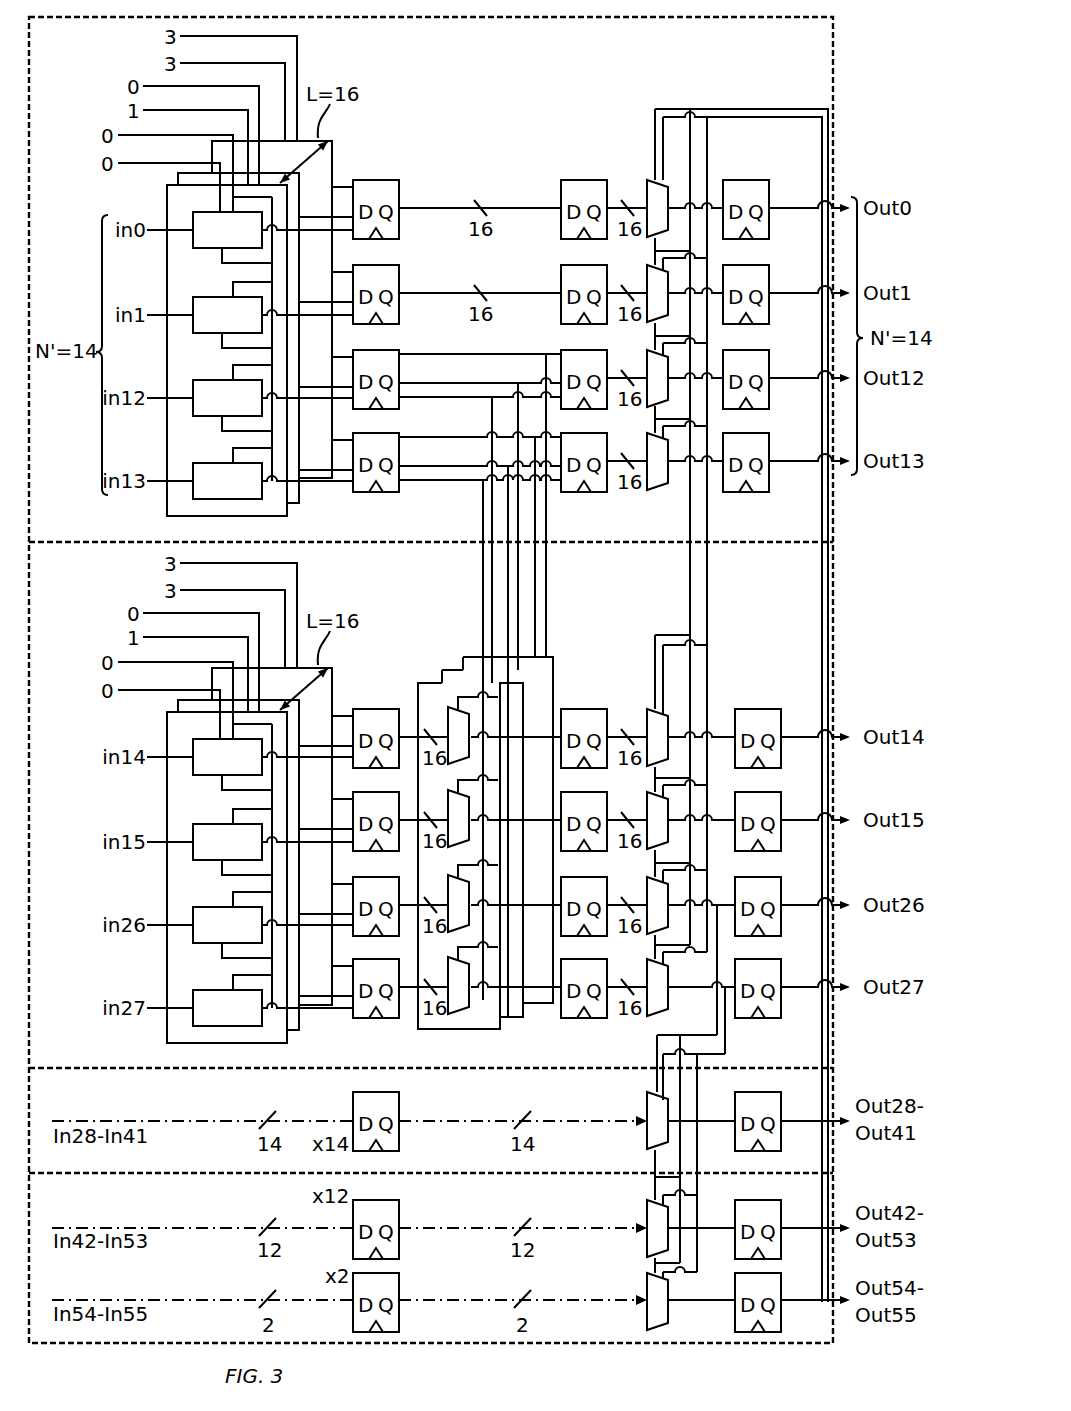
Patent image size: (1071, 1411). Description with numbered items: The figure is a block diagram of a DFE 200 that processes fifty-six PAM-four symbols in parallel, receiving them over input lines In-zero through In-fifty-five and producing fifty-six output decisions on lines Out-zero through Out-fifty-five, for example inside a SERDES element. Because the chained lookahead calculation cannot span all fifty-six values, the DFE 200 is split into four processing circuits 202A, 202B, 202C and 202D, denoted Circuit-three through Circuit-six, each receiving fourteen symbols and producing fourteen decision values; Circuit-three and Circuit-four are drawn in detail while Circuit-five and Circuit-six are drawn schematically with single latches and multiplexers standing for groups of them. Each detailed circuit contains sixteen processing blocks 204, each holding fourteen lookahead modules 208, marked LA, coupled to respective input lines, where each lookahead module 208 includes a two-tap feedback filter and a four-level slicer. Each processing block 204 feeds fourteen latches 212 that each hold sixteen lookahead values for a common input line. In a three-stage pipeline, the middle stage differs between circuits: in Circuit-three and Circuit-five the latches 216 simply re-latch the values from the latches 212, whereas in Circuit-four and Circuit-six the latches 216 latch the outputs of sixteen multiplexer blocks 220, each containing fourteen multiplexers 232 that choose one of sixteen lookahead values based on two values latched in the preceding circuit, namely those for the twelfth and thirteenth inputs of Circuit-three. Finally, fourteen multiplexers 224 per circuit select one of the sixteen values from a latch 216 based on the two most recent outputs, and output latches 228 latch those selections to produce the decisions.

The DFE 200 is at (868, 60).
The processing circuit 202A is at (431, 284).
The processing circuit 202B is at (431, 809).
The processing circuit 202C is at (431, 1127).
The processing circuit 202D is at (118, 1191).
The processing block 204 is at (167, 185).
The lookahead module 208 is at (210, 248).
The latch 212 is at (400, 235).
The latch 216 is at (560, 183).
The multiplexer block 220 is at (498, 703).
The multiplexer 224 is at (643, 180).
The output latch 228 is at (744, 180).
The multiplexer 232 is at (445, 715).